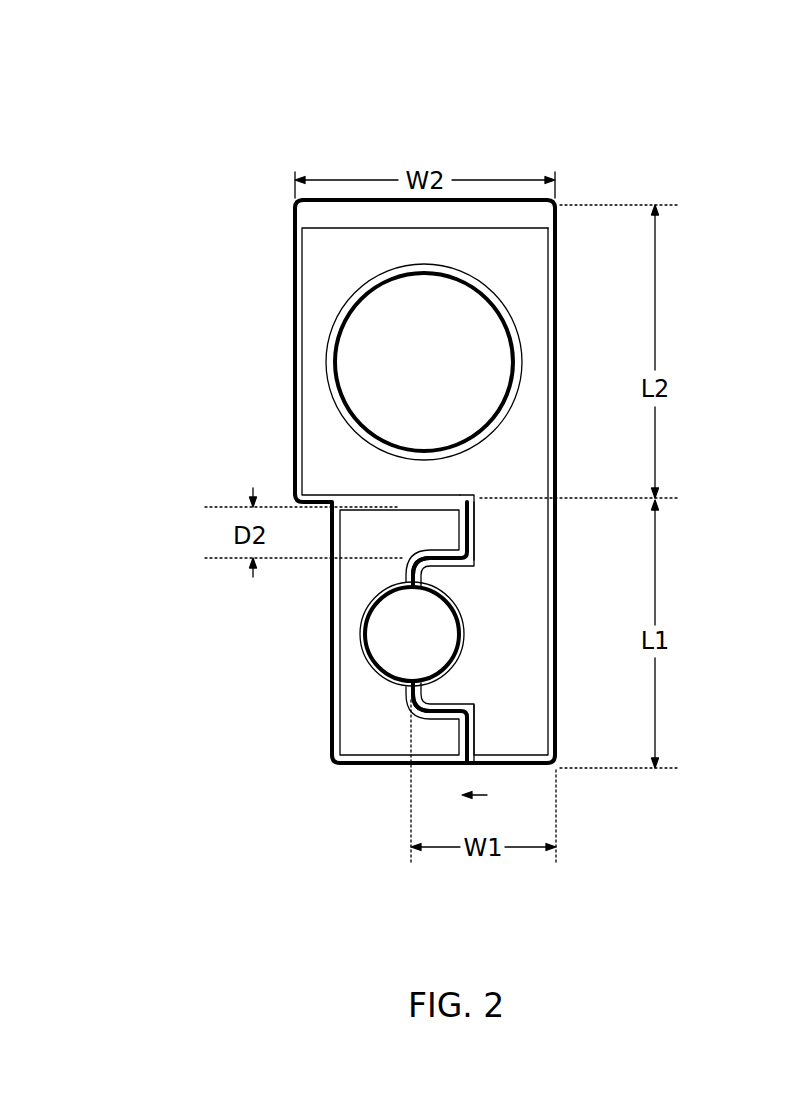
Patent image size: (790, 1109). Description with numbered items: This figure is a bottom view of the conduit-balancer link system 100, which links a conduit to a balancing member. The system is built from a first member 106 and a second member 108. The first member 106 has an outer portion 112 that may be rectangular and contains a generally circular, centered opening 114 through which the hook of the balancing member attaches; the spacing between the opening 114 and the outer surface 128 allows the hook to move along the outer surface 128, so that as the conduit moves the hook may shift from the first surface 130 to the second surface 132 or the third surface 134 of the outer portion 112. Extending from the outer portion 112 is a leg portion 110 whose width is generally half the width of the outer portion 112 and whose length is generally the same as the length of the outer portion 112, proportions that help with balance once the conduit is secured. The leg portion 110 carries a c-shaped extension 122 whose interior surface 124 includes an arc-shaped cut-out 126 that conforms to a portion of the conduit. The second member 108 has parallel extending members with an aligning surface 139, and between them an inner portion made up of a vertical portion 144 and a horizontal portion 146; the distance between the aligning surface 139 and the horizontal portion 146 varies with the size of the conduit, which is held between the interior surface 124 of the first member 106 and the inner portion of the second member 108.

The conduit-balancer link system 100 is at (508, 80).
The first member 106 is at (318, 289).
The second member 108 is at (320, 697).
The leg portion 110 is at (515, 677).
The outer portion 112 is at (490, 273).
The opening 114 is at (412, 366).
The c-shaped extension 122 is at (453, 705).
The interior surface 124 is at (455, 637).
The cut-out 126 is at (462, 606).
The outer surface 128 is at (462, 210).
The first surface 130 is at (557, 362).
The second surface 132 is at (395, 207).
The third surface 134 is at (296, 354).
The aligning surface 139 is at (474, 528).
The vertical portion 144 is at (410, 579).
The horizontal portion 146 is at (405, 696).